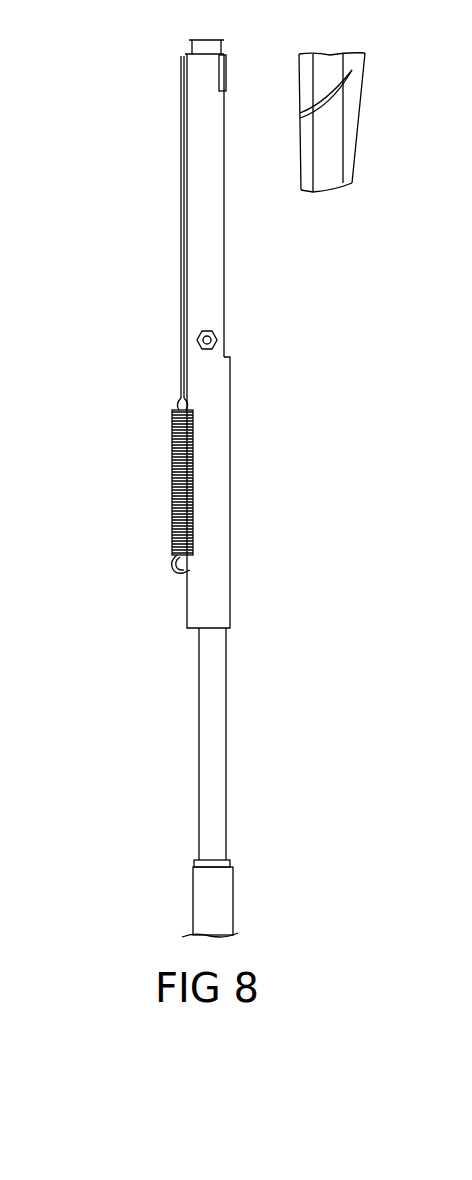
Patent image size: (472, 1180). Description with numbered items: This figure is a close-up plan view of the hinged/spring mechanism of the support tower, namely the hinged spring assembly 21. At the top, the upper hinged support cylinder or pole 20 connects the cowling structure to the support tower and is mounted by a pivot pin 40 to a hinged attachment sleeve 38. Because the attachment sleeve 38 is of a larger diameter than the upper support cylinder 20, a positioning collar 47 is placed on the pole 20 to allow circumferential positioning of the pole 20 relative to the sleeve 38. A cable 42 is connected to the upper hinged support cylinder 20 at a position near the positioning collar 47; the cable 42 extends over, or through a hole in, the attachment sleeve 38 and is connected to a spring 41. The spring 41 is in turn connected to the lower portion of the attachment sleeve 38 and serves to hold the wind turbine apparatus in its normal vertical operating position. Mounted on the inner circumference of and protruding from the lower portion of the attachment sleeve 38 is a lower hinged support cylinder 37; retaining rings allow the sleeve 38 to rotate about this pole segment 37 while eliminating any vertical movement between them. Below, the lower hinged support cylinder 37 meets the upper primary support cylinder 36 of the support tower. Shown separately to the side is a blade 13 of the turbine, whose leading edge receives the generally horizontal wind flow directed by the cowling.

The blade 13 is at (350, 128).
The upper support cylinder 20 is at (202, 47).
The hinged spring assembly 21 is at (135, 418).
The upper primary support cylinder 36 is at (222, 907).
The lower hinged support cylinder 37 is at (208, 730).
The attachment sleeve 38 is at (215, 497).
The pivot pin 40 is at (210, 337).
The spring 41 is at (177, 532).
The cable 42 is at (180, 302).
The positioning collar 47 is at (222, 73).